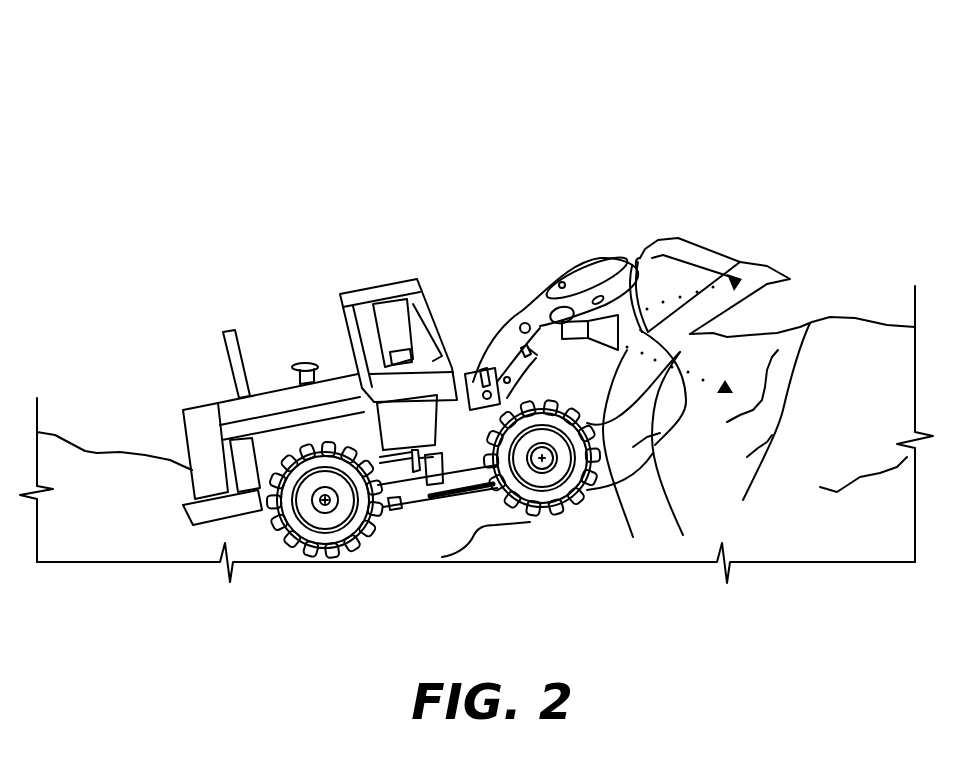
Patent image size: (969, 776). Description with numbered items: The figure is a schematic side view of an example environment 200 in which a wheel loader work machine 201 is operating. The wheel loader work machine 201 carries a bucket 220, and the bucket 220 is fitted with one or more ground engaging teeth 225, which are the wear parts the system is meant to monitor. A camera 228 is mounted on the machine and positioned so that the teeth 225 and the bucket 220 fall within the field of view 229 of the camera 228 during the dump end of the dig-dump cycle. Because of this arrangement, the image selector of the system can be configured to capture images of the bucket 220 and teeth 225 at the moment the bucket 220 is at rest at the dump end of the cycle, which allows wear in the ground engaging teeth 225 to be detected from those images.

The environment 200 is at (442, 72).
The wheel loader work machine 201 is at (221, 225).
The bucket 220 is at (703, 249).
The camera 228 is at (526, 314).
The field of view 229 is at (633, 537).
The ground engaging teeth 225 is at (683, 535).